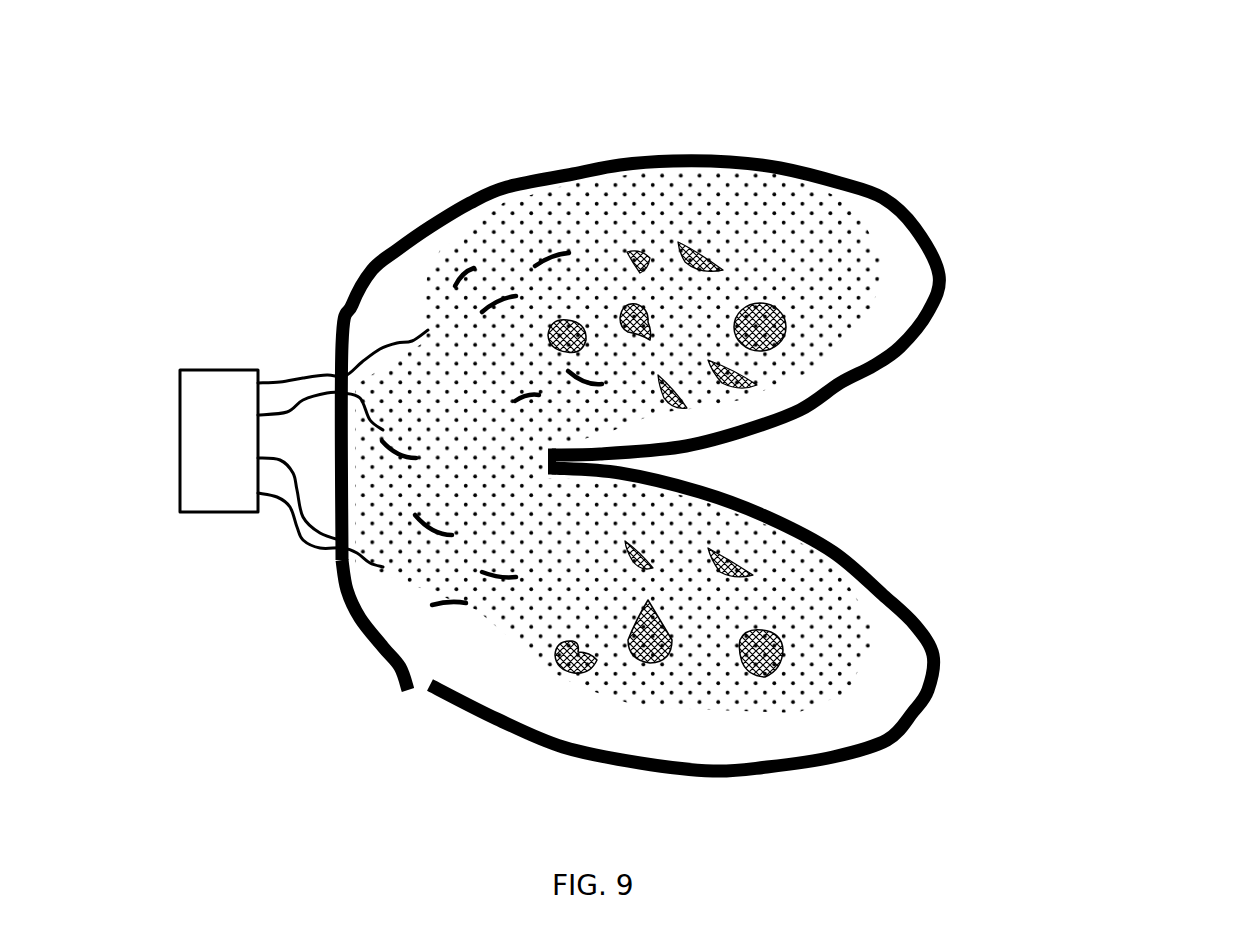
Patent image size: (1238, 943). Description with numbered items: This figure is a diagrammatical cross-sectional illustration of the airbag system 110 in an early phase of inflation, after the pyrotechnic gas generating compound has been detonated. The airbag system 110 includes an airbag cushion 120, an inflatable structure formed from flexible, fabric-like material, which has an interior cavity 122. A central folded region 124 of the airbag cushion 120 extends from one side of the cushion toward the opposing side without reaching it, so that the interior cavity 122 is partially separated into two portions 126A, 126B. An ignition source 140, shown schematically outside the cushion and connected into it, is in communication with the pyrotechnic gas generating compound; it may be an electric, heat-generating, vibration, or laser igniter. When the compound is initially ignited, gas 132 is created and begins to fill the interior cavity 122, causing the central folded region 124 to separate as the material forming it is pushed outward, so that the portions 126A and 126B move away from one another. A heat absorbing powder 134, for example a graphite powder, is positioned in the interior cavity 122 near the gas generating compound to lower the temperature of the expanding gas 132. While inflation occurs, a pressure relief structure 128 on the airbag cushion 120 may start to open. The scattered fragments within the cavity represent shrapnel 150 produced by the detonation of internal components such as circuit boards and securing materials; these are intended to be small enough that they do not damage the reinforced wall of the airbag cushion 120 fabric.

The airbag system 110 is at (170, 110).
The airbag cushion 120 is at (771, 427).
The interior cavity 122 is at (711, 195).
The central folded region 124 is at (880, 485).
The first portion of the interior cavity 126A is at (762, 360).
The second portion of the interior cavity 126B is at (772, 626).
The pressure relief structure 128 is at (423, 713).
The gas 132 is at (835, 243).
The heat absorbing powder 134 is at (722, 712).
The ignition source 140 is at (198, 451).
The shrapnel 150 is at (418, 340).